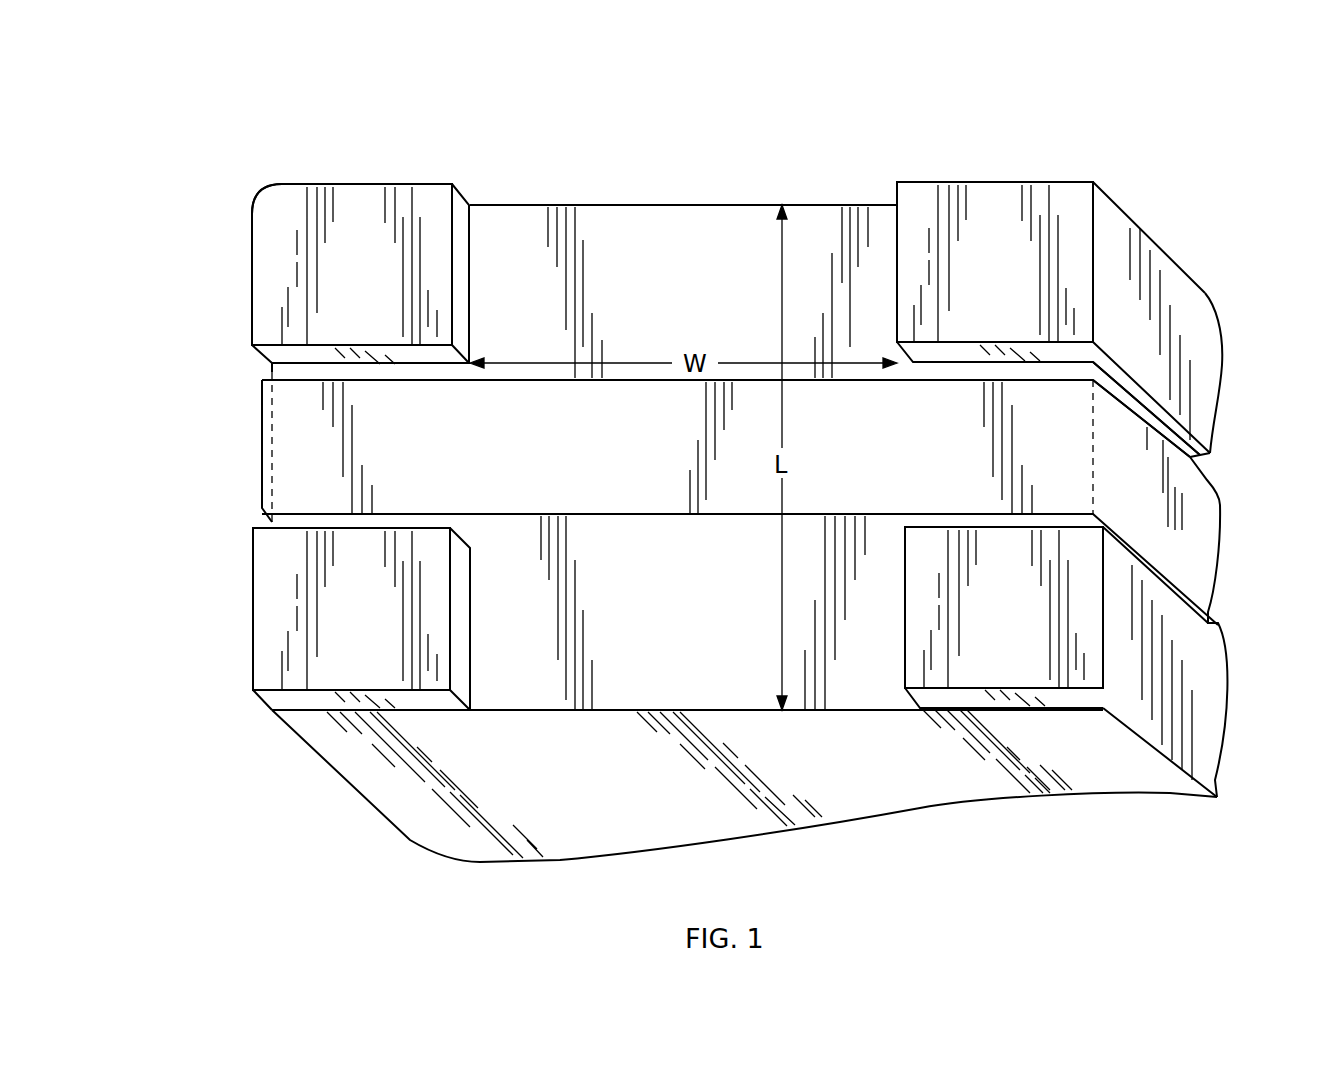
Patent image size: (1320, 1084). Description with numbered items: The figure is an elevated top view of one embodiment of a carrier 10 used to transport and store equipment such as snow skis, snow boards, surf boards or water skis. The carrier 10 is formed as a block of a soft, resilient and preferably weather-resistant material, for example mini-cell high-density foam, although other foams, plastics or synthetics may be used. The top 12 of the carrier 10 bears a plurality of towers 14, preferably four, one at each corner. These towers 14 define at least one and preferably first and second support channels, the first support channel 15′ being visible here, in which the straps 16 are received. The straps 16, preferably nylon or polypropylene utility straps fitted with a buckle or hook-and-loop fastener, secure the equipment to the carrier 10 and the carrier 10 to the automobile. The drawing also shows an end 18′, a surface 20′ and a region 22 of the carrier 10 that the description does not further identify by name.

The carrier 10 is at (847, 133).
The top 12 is at (527, 622).
The towers 14 is at (1014, 617).
The first support channel 15′ is at (1058, 444).
The straps 16 is at (727, 514).
The first end 18′ is at (1182, 204).
The top surface 20′ is at (652, 183).
The second layer 22 is at (680, 302).